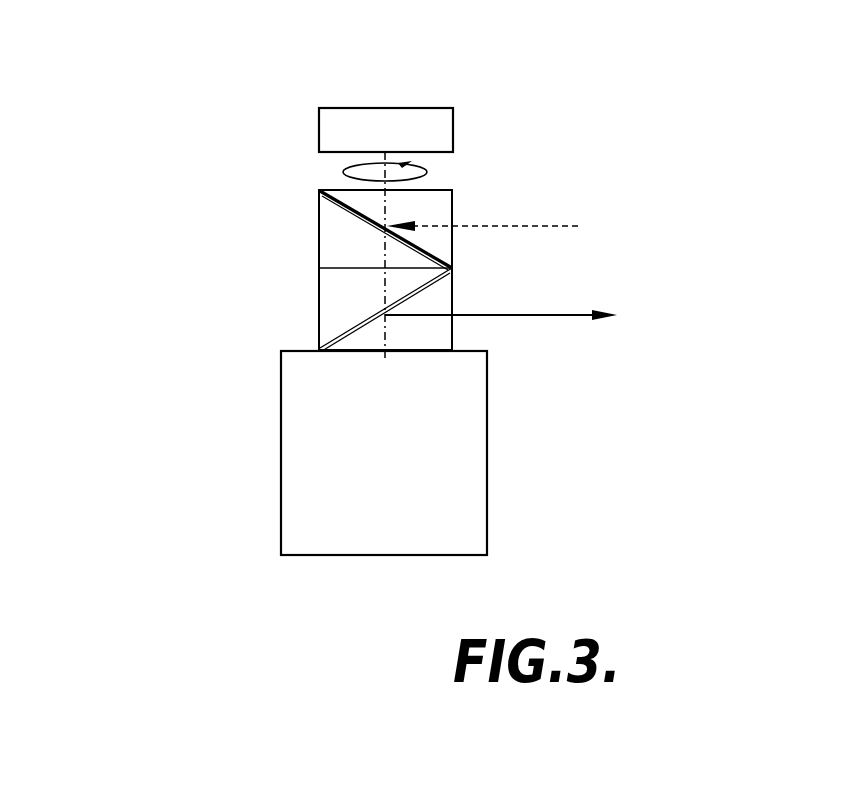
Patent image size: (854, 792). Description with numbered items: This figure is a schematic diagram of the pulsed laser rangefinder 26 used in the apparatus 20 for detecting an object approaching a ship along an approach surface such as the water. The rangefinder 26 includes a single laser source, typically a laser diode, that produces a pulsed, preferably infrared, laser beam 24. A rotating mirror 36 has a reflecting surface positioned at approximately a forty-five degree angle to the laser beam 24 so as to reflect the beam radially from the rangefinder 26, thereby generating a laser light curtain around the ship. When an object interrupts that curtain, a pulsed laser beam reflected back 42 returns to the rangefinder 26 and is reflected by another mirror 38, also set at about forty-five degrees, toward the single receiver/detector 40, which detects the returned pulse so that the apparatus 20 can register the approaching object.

The apparatus 20 is at (193, 504).
The pulsed laser beam 24 is at (560, 315).
The pulsed laser rangefinder 26 is at (384, 488).
The rotating mirror 36 is at (400, 303).
The mirror 38 is at (390, 238).
The receiver/detector 40 is at (453, 122).
The pulsed laser beam reflected back 42 is at (547, 228).